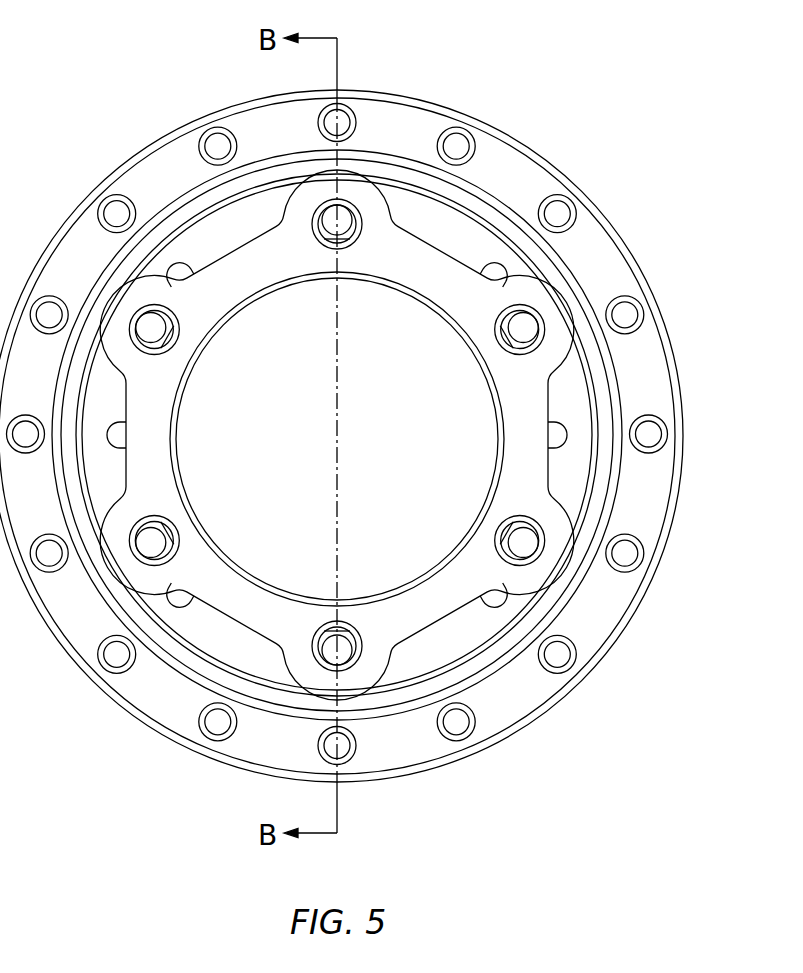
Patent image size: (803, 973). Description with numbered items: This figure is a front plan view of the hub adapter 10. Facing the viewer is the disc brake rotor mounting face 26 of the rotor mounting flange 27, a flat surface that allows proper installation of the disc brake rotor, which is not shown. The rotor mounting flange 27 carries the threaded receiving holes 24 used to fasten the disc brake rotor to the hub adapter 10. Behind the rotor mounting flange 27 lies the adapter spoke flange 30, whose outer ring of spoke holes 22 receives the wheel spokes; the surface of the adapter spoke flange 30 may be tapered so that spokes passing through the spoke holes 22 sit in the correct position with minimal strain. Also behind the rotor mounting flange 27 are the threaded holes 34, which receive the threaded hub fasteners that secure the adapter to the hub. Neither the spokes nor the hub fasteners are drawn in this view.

The hub adapter 10 is at (471, 211).
The spoke holes 22 is at (646, 543).
The threaded receiving holes 24 is at (545, 312).
The disc brake rotor mounting face 26 is at (527, 421).
The rotor mounting flange 27 is at (391, 667).
The adapter spoke flange 30 is at (154, 694).
The threaded holes 34 is at (180, 268).